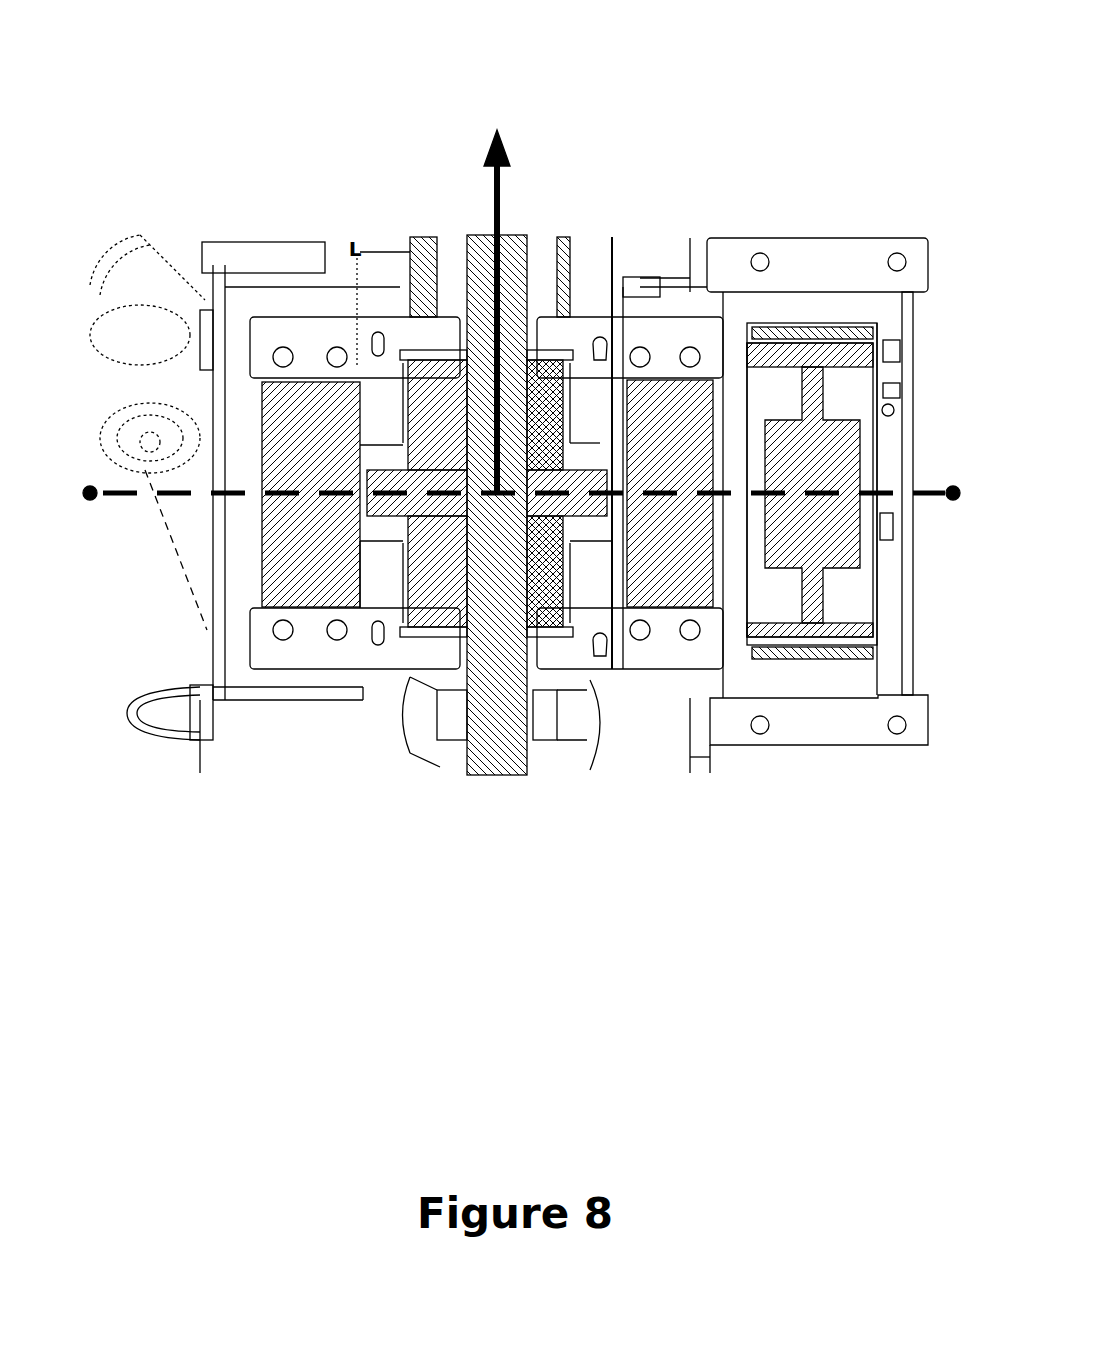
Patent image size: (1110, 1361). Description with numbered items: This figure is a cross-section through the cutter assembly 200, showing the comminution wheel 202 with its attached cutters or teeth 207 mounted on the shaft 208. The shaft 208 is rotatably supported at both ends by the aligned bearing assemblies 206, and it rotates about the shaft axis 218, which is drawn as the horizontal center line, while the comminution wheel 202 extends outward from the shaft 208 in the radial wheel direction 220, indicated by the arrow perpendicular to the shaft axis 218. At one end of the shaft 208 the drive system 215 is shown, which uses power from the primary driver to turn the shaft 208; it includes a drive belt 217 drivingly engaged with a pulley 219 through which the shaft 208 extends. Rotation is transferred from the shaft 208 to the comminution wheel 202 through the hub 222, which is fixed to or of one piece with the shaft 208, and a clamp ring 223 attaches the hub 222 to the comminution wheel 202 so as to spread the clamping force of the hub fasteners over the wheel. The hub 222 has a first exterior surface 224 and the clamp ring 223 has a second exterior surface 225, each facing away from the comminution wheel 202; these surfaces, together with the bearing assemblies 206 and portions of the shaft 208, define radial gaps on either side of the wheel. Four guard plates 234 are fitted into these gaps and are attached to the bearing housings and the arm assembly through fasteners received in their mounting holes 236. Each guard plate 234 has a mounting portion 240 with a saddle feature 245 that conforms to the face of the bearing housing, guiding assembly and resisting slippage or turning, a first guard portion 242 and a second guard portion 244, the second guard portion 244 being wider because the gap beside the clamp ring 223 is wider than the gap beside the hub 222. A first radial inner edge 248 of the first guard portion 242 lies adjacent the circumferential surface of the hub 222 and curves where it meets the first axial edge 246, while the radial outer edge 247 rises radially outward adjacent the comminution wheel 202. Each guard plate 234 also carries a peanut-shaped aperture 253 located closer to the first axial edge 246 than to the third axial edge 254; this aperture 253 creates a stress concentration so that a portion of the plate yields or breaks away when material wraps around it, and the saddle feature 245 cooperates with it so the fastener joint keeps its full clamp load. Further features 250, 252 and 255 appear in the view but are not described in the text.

The cutter assembly 200 is at (818, 73).
The comminution wheel 202 is at (505, 765).
The bearing assemblies 206 is at (262, 578).
The cutters or teeth 207 is at (549, 243).
The shaft 208 is at (503, 508).
The drive system 215 is at (908, 438).
The drive belt 217 is at (858, 653).
The shaft axis 218 is at (90, 500).
The pulley 219 is at (840, 607).
The radial wheel direction 220 is at (505, 180).
The hub 222 is at (433, 562).
The clamp ring 223 is at (608, 596).
The first exterior surface 224 is at (402, 600).
The second exterior surface 225 is at (568, 572).
The guard plates 234 is at (313, 352).
The mounting holes 236 is at (283, 645).
The mounting portion 240 is at (348, 330).
The first guard portion 242 is at (448, 330).
The second guard portion 244 is at (600, 412).
The saddle feature 245 is at (534, 428).
The first axial edge 246 is at (524, 323).
The radial outer edge 247 is at (427, 680).
The first radial inner edge 248 is at (430, 362).
The bracket member 250 is at (600, 451).
The gear 252 is at (353, 413).
The aperture 253 is at (601, 330).
The third axial edge 254 is at (245, 645).
The lower keyhole slot 255 is at (640, 614).